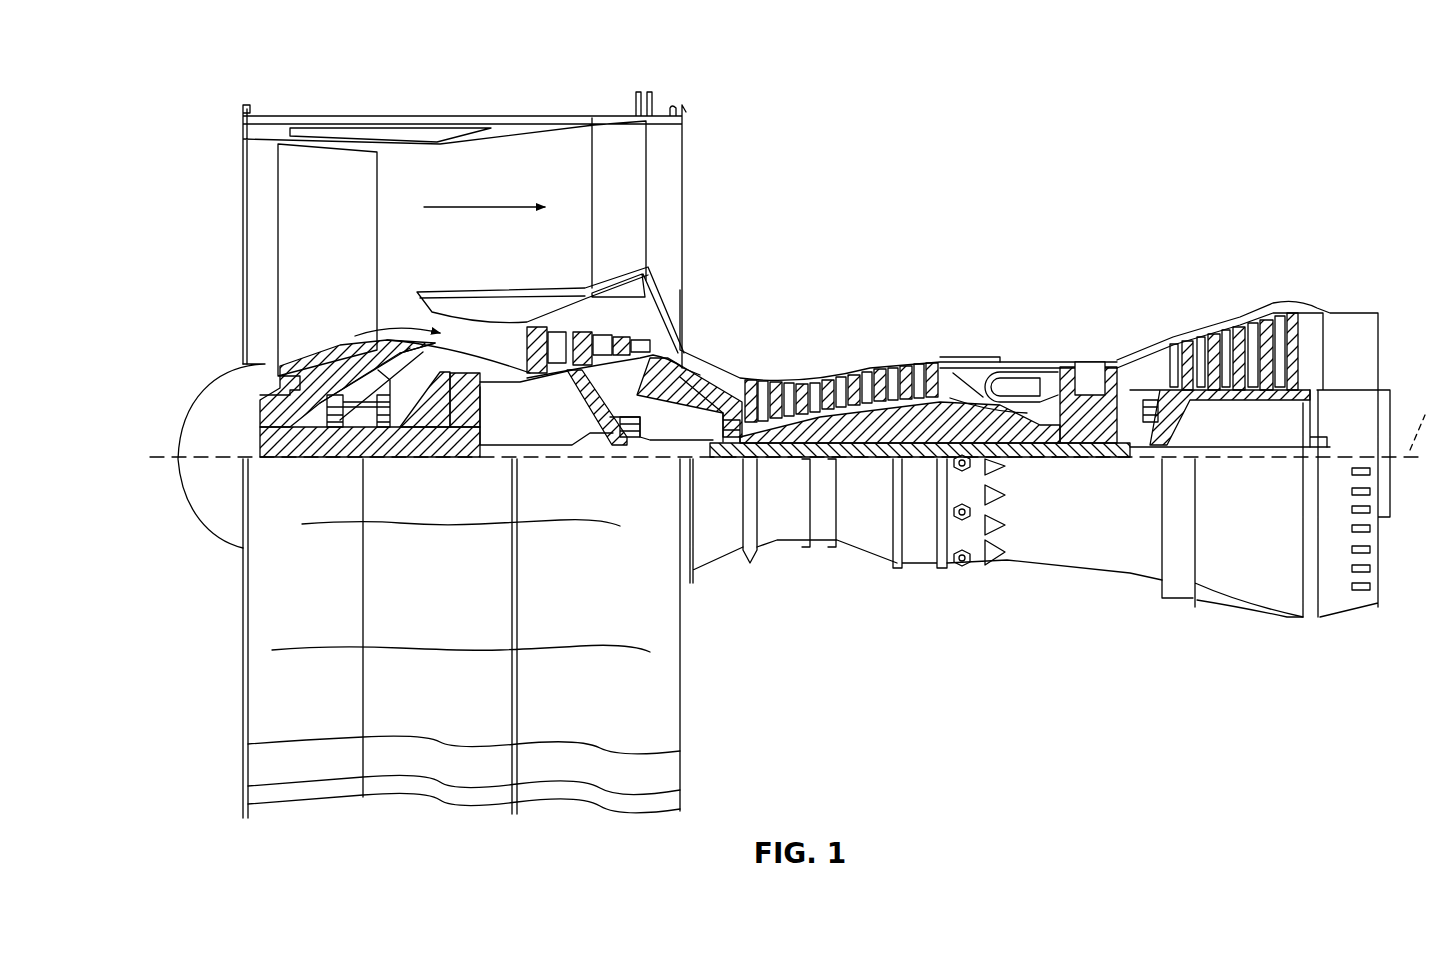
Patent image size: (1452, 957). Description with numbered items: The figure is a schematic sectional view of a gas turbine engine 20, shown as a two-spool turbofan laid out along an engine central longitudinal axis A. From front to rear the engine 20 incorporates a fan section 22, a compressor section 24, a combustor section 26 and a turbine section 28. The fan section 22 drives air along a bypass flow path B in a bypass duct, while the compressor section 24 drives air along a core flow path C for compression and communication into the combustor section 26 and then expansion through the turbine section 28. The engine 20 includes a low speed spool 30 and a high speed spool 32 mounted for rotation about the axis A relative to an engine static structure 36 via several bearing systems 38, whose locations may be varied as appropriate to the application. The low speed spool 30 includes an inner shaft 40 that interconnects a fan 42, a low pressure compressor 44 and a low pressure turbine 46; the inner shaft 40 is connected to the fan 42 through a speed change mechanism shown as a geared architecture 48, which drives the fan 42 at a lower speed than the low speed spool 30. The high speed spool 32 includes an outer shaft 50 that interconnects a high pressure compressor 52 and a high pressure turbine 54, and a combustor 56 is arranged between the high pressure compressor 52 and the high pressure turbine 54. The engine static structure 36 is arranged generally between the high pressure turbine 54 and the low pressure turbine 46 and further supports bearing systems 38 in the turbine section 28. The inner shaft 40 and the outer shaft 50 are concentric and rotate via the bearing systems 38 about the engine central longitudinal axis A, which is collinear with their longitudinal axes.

The gas turbine engine 20 is at (1258, 123).
The fan section 22 is at (343, 113).
The compressor section 24 is at (843, 272).
The combustor section 26 is at (1027, 258).
The turbine section 28 is at (1167, 250).
The low speed spool 30 is at (881, 466).
The high speed spool 32 is at (930, 410).
The engine static structure 36 is at (921, 568).
The bearing systems 38 is at (330, 430).
The inner shaft 40 is at (700, 459).
The fan 42 is at (309, 253).
The low pressure compressor 44 is at (600, 338).
The low pressure turbine 46 is at (1240, 330).
The geared architecture 48 is at (470, 437).
The outer shaft 50 is at (1037, 442).
The high pressure compressor 52 is at (833, 423).
The high pressure turbine 54 is at (1087, 362).
The combustor 56 is at (1013, 380).
The engine central longitudinal axis A is at (1423, 420).
The bypass flow path B is at (486, 203).
The core flow path C is at (368, 322).